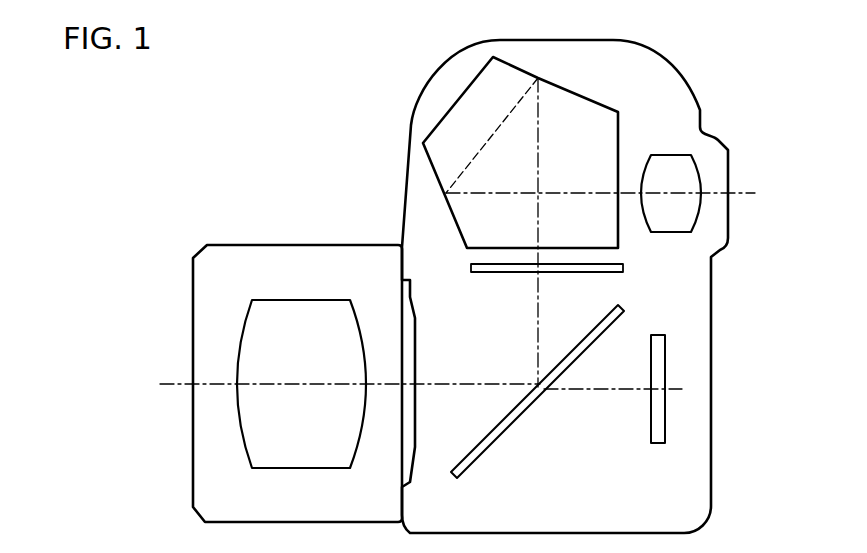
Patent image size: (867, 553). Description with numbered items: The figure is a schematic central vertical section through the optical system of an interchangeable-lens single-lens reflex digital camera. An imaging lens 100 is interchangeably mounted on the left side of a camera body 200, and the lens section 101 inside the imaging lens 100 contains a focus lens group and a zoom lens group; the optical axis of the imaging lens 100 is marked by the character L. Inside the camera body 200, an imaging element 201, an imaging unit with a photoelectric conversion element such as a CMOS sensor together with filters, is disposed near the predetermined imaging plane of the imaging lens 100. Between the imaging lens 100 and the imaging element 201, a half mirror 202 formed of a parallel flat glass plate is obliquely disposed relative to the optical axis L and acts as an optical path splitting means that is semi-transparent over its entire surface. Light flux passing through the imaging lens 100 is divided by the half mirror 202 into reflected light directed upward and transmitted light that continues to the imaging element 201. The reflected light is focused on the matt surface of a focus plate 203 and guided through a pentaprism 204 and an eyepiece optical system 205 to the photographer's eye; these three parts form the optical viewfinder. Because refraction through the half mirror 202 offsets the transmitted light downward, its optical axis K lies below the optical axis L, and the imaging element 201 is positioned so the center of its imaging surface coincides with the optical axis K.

The imaging lens 100 is at (257, 252).
The lens section 101 is at (286, 459).
The camera body 200 is at (677, 97).
The imaging element 201 is at (659, 436).
The half mirror 202 is at (498, 432).
The focus plate 203 is at (482, 268).
The pentaprism 204 is at (452, 128).
The eyepiece optical system 205 is at (668, 227).
The optical axis of the imaging lens L is at (168, 388).
The optical axis of the transmitted light K is at (606, 392).